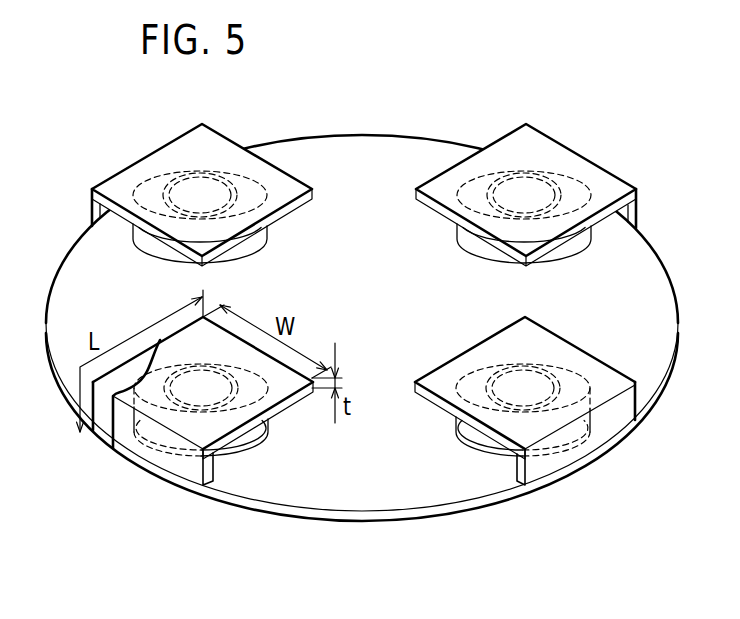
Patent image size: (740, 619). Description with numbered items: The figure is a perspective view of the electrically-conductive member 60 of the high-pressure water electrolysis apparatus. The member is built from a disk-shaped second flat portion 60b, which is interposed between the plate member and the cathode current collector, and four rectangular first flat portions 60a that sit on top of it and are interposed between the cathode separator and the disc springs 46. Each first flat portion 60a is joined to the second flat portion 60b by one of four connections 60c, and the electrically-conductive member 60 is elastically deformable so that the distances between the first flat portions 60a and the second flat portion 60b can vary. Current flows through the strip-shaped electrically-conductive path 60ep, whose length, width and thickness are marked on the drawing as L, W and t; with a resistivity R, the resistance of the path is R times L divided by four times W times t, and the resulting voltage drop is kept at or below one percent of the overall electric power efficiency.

The electrically-conductive member 60 is at (420, 533).
The first flat portion 60a is at (281, 192).
The second flat portion 60b is at (355, 522).
The connection 60c is at (91, 212).
The electrically-conductive path 60ep is at (121, 446).
The disc spring 46 is at (168, 257).